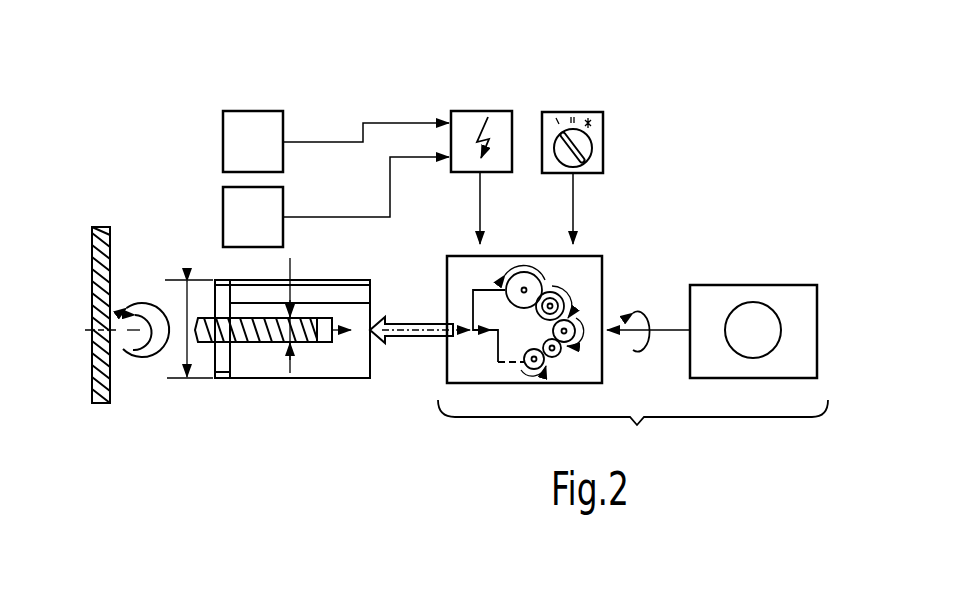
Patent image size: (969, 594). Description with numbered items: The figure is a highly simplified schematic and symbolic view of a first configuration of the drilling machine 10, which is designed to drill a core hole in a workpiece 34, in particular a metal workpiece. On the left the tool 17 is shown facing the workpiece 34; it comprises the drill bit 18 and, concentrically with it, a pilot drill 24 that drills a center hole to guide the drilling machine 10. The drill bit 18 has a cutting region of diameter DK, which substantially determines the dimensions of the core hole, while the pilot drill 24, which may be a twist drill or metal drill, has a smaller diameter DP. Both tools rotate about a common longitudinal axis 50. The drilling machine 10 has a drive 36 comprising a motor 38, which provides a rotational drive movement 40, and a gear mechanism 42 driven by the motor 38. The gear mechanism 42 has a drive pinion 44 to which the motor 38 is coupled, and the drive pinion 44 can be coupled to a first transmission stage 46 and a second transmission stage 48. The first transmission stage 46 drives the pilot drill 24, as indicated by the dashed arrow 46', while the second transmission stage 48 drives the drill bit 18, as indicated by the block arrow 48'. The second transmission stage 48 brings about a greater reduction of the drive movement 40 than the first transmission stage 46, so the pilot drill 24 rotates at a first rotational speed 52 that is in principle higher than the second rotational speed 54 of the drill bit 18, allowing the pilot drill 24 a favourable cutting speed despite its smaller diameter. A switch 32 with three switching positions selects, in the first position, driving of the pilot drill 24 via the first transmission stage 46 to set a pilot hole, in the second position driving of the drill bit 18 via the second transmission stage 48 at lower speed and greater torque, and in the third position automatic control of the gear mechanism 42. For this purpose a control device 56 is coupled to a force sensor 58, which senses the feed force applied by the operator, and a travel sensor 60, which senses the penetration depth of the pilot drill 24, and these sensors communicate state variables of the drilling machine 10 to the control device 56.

The drilling machine 10 is at (626, 173).
The tool 17 is at (232, 412).
The drill bit 18 is at (273, 385).
The pilot drill 24 is at (205, 337).
The switch 32 is at (585, 110).
The workpiece 34 is at (107, 227).
The drive 36 is at (633, 427).
The motor 38 is at (740, 285).
The drive movement 40 is at (650, 357).
The gear mechanism 42 is at (606, 271).
The drive pinion 44 is at (578, 342).
The first transmission stage 46 is at (463, 374).
The dashed arrow 46' is at (367, 391).
The second transmission stage 48 is at (466, 273).
The block arrow 48' is at (406, 288).
The longitudinal axis 50 is at (180, 329).
The first rotational speed 52 is at (143, 363).
The second rotational speed 54 is at (147, 294).
The control device 56 is at (480, 110).
The force sensor 58 is at (252, 110).
The travel sensor 60 is at (222, 198).
The diameter of the cutting region DK is at (178, 300).
The diameter of the pilot drill DP is at (292, 268).